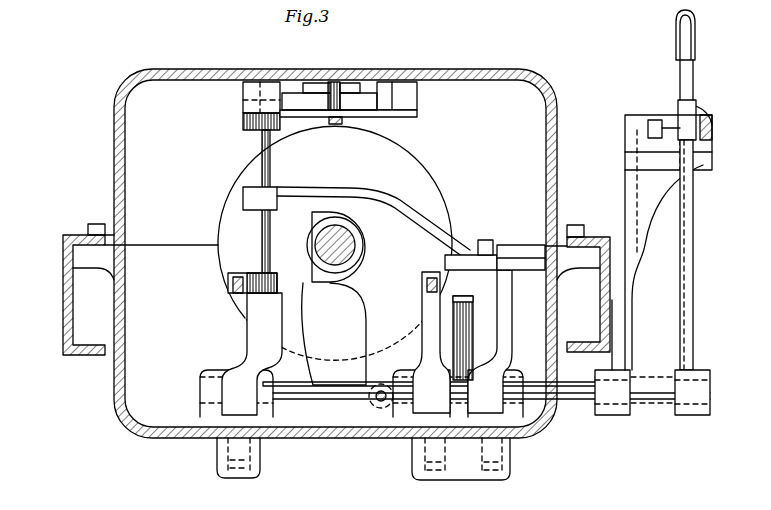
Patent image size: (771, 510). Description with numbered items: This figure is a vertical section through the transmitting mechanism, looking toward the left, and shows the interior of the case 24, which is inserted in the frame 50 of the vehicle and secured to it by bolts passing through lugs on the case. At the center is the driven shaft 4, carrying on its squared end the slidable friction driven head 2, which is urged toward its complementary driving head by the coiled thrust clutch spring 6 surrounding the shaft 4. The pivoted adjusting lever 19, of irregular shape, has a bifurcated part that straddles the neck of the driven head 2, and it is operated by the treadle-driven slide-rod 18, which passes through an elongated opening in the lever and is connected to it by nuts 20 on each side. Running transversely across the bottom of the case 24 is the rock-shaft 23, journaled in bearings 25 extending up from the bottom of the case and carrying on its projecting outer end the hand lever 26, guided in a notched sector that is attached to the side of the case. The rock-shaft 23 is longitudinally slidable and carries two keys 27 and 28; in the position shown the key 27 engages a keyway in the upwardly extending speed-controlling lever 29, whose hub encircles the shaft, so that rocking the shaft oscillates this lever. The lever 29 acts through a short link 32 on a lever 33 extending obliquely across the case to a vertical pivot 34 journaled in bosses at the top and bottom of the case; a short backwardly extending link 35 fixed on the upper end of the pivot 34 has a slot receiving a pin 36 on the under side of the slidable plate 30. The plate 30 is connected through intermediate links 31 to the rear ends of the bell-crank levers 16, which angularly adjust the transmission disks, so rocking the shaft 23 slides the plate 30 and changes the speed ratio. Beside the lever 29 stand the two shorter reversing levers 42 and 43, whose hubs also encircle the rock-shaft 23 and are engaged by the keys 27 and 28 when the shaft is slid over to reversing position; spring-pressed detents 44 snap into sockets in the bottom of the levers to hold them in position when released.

The friction driven head 2 is at (432, 180).
The driven shaft 4 is at (317, 240).
The thrust clutch spring 6 is at (309, 256).
The bell-crank levers 16 is at (284, 82).
The slide-rod 18 is at (380, 406).
The adjusting lever 19 is at (354, 298).
The nuts 20 is at (371, 400).
The rock-shaft 23 is at (652, 402).
The case 24 is at (120, 385).
The bearings 25 is at (205, 388).
The hand lever 26 is at (693, 290).
The key 27 is at (476, 380).
The key 28 is at (283, 384).
The speed-controlling lever 29 is at (497, 315).
The slidable plate 30 is at (336, 82).
The intermediate links 31 is at (318, 85).
The short link 32 is at (490, 252).
The lever 33 is at (364, 189).
The vertical pivot 34 is at (262, 142).
The backwardly extending link 35 is at (318, 118).
The pin 36 is at (338, 125).
The reversing lever 42 is at (426, 310).
The reversing lever 43 is at (238, 322).
The spring-pressed detents 44 is at (262, 447).
The frame 50 is at (66, 312).